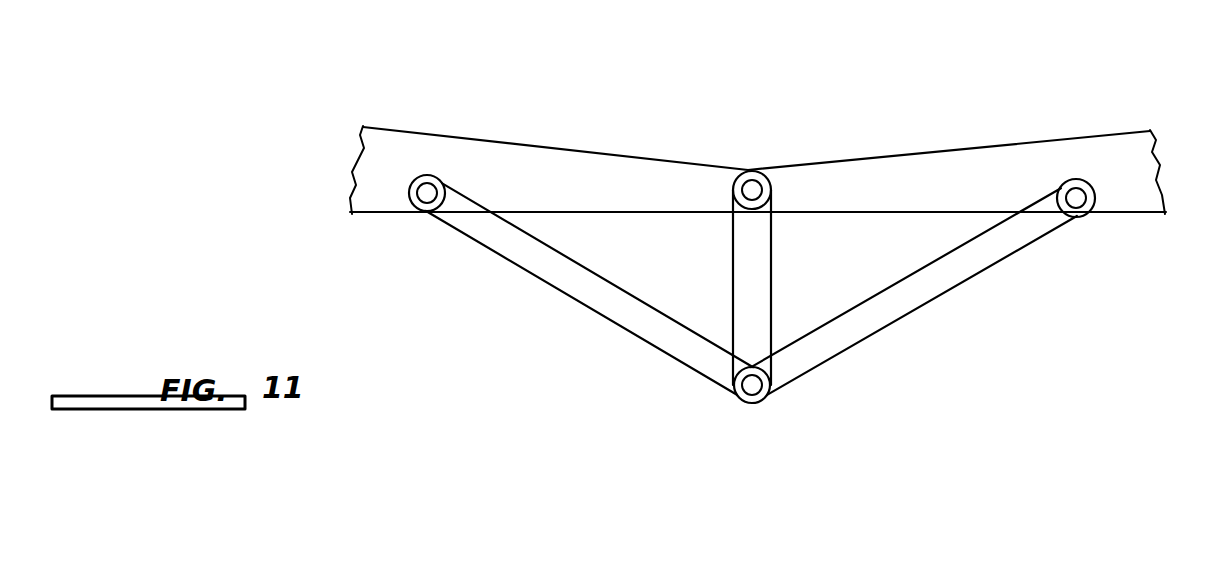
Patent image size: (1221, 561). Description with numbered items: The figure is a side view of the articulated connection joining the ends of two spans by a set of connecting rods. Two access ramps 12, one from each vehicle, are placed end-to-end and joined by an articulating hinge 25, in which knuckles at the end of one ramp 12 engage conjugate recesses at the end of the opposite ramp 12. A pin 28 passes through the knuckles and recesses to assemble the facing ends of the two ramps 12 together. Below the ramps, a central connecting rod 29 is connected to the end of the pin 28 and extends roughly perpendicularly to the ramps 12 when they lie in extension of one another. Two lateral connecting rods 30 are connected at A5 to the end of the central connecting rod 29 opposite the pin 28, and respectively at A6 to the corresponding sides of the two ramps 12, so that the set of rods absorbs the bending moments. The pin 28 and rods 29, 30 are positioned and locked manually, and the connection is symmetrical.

The access ramp 12 is at (573, 176).
The articulating hinge 25 is at (745, 169).
The pin 28 is at (755, 188).
The central connecting rod 29 is at (755, 325).
The lateral connecting rod 30 is at (590, 288).
The connection point of lateral rods to central rod A5 is at (752, 386).
The connection point of lateral rods to ramps A6 is at (427, 195).